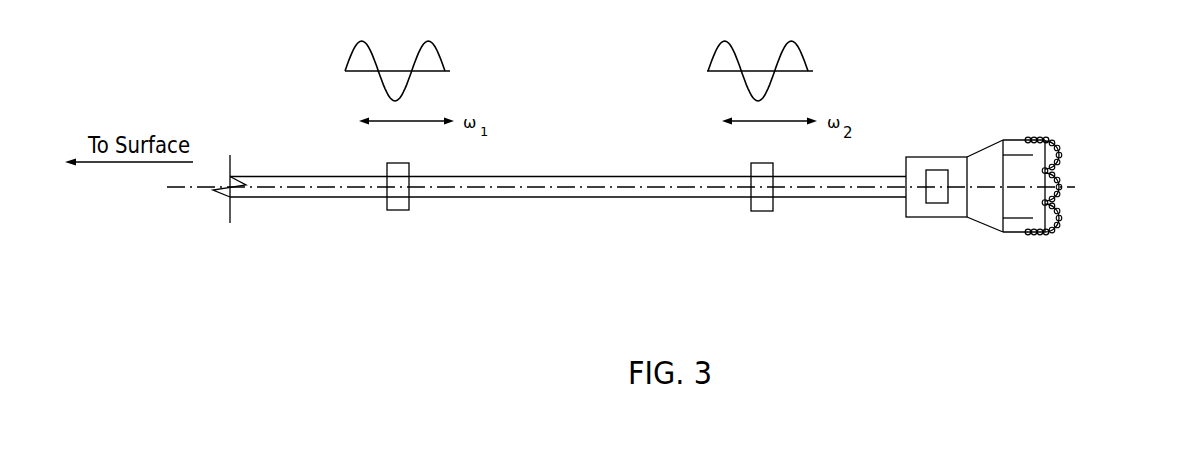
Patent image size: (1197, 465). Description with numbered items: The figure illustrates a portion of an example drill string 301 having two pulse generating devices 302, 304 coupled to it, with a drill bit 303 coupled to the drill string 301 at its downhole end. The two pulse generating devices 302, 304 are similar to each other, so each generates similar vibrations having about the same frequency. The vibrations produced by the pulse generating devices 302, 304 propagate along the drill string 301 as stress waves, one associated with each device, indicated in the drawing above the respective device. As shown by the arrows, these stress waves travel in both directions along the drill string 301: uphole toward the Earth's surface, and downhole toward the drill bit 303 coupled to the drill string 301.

The drill string 301 is at (862, 198).
The pulse generating device 302 is at (399, 211).
The drill bit 303 is at (1062, 157).
The pulse generating device 304 is at (764, 212).